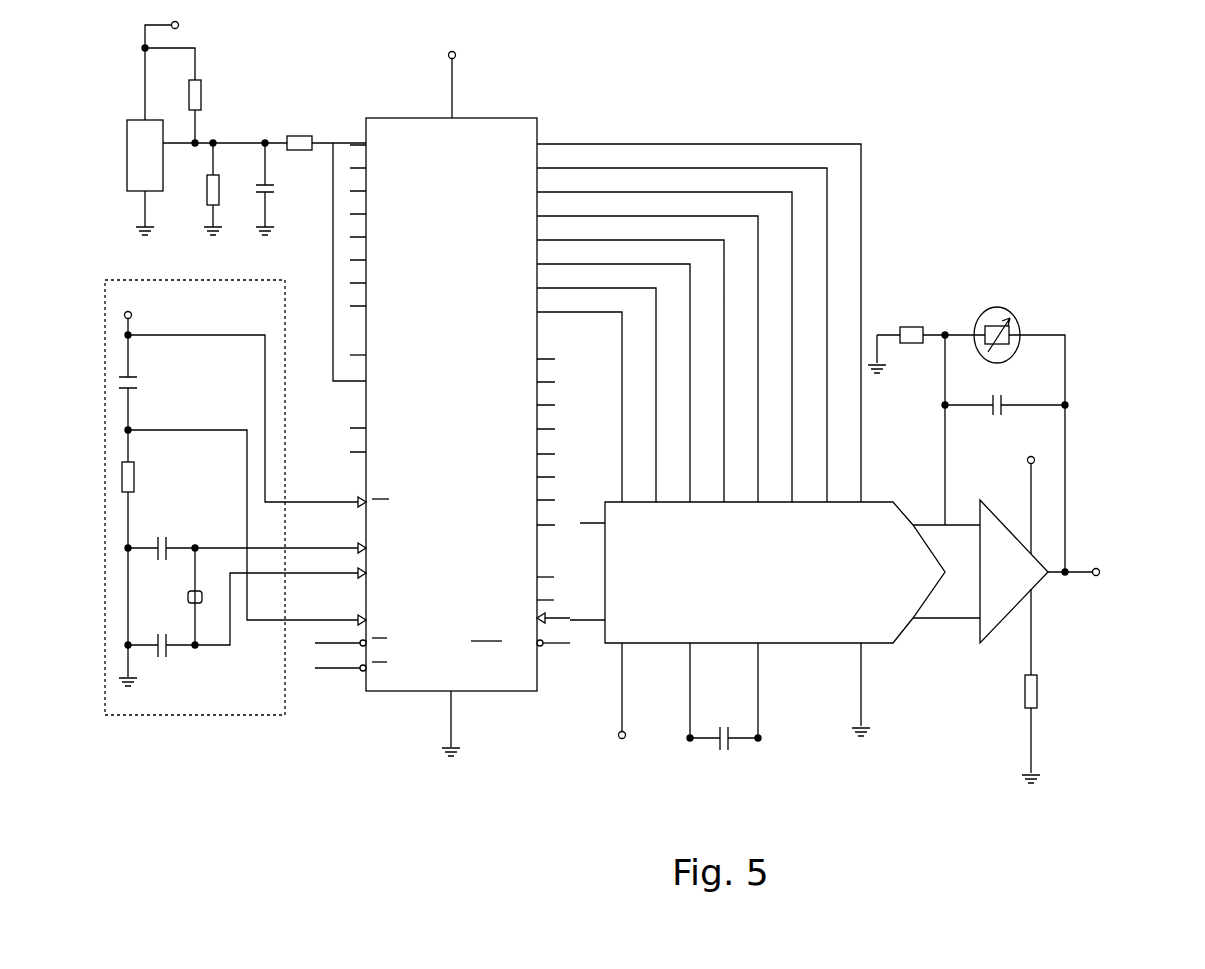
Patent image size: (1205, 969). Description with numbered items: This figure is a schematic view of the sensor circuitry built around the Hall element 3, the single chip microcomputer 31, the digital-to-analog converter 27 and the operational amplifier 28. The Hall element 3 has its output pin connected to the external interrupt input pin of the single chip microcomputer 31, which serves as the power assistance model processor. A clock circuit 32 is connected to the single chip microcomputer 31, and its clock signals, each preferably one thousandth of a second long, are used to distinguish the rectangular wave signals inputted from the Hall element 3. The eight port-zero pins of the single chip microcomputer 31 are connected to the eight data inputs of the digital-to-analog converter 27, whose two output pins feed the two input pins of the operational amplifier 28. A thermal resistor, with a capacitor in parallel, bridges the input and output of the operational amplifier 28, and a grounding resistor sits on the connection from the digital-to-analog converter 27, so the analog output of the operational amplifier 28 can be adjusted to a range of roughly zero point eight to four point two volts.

The Hall element 3 is at (125, 150).
The digital-to-analog converter 27 is at (792, 645).
The operational amplifier 28 is at (998, 625).
The single chip microcomputer 31 is at (520, 692).
The clock circuit 32 is at (258, 718).